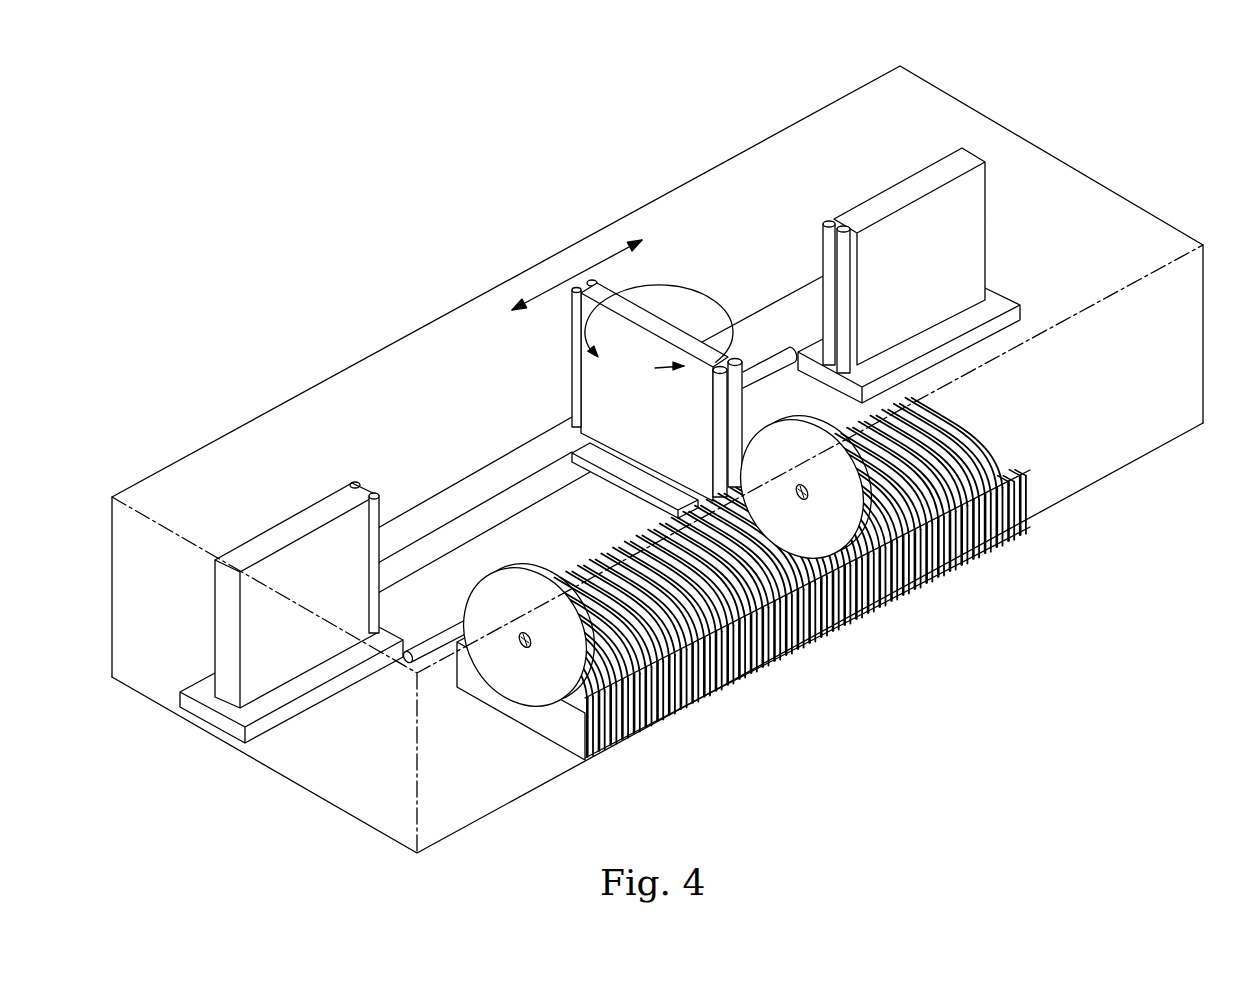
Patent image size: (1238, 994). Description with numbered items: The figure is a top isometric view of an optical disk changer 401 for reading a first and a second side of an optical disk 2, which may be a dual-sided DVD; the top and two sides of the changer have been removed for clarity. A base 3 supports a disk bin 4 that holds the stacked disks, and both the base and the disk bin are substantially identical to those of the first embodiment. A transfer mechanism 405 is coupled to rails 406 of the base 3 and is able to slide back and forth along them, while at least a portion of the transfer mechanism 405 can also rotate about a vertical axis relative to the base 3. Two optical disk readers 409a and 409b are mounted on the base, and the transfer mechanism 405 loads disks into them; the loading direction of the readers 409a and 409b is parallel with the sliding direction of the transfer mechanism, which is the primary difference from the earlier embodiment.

The optical disk 2 is at (800, 597).
The base 3 is at (360, 742).
The disk bin 4 is at (485, 683).
The optical disk changer 401 is at (990, 92).
The transfer mechanism 405 is at (663, 323).
The rails 406 is at (520, 507).
The optical disk reader 409a is at (296, 528).
The optical disk reader 409b is at (908, 190).